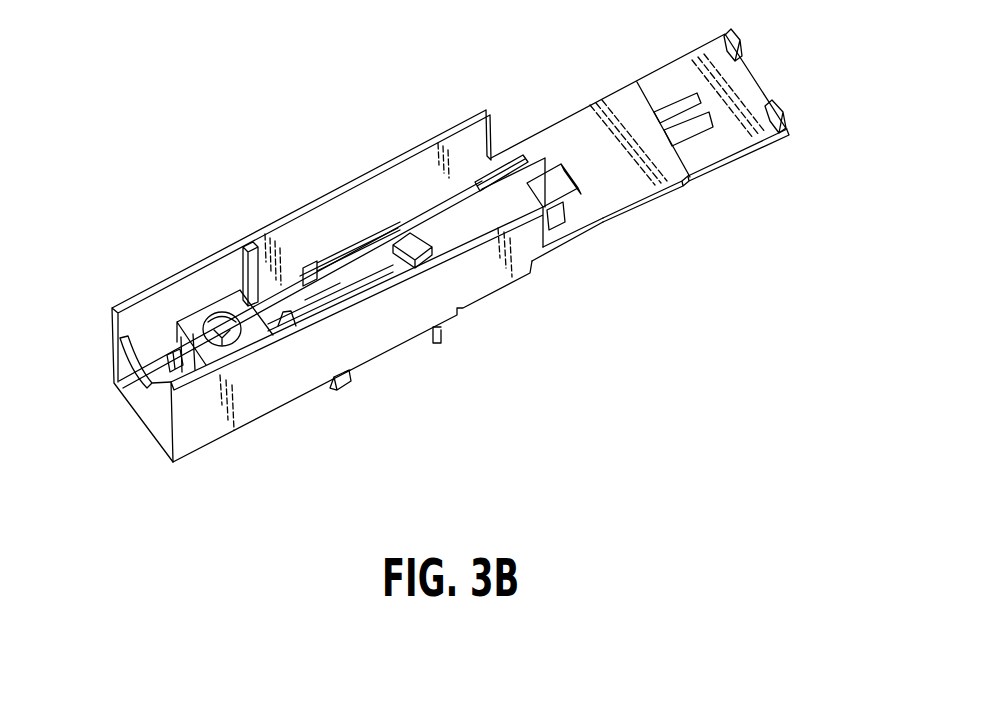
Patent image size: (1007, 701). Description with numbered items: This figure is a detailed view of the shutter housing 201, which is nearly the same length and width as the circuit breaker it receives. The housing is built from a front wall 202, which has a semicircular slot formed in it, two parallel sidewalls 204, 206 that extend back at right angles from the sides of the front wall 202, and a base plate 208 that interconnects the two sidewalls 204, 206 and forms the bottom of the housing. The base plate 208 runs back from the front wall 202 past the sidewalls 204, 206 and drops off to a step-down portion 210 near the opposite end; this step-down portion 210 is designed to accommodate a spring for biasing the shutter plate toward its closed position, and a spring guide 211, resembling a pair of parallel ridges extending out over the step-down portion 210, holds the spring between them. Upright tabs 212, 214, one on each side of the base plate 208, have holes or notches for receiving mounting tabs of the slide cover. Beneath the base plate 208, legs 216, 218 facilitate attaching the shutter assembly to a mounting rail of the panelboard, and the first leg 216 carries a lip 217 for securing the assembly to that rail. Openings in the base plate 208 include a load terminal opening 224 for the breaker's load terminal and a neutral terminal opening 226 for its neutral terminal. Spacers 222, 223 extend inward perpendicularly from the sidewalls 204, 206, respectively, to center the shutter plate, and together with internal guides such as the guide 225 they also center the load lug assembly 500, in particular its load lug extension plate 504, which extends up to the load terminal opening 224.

The shutter housing 201 is at (395, 340).
The front wall 202 is at (127, 373).
The sidewall 204 is at (487, 280).
The sidewall 206 is at (443, 140).
The base plate 208 is at (593, 228).
The step-down portion 210 is at (711, 170).
The spring guide 211 is at (668, 100).
The tab 212 is at (737, 36).
The tab 214 is at (775, 106).
The first leg 216 is at (340, 388).
The lip 217 is at (352, 373).
The leg 218 is at (440, 333).
The spacer 222 is at (280, 328).
The spacer 223 is at (244, 243).
The load terminal opening 224 is at (412, 249).
The internal guide 225 is at (330, 240).
The neutral terminal opening 226 is at (550, 175).
The load lug assembly 500 is at (168, 331).
The load lug extension plate 504 is at (320, 297).